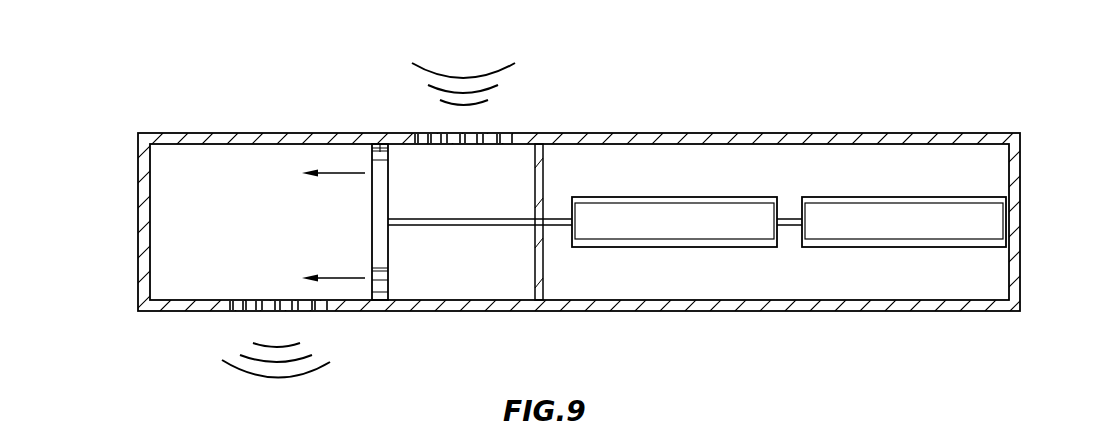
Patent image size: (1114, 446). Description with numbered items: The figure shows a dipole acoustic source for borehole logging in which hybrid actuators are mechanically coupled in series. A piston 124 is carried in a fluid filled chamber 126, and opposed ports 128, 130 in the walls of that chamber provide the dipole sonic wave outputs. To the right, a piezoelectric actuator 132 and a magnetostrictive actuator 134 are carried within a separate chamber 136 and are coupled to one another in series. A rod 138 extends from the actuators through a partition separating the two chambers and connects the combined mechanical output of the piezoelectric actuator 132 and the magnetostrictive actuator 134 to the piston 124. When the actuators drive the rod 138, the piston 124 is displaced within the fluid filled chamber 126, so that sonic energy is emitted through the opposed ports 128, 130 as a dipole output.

The piston 124 is at (380, 140).
The fluid filled chamber 126 is at (170, 153).
The port 128 is at (235, 308).
The port 130 is at (505, 133).
The piezoelectric actuator 132 is at (698, 232).
The magnetostrictive actuator 134 is at (933, 232).
The chamber 136 is at (658, 288).
The rod 138 is at (472, 216).